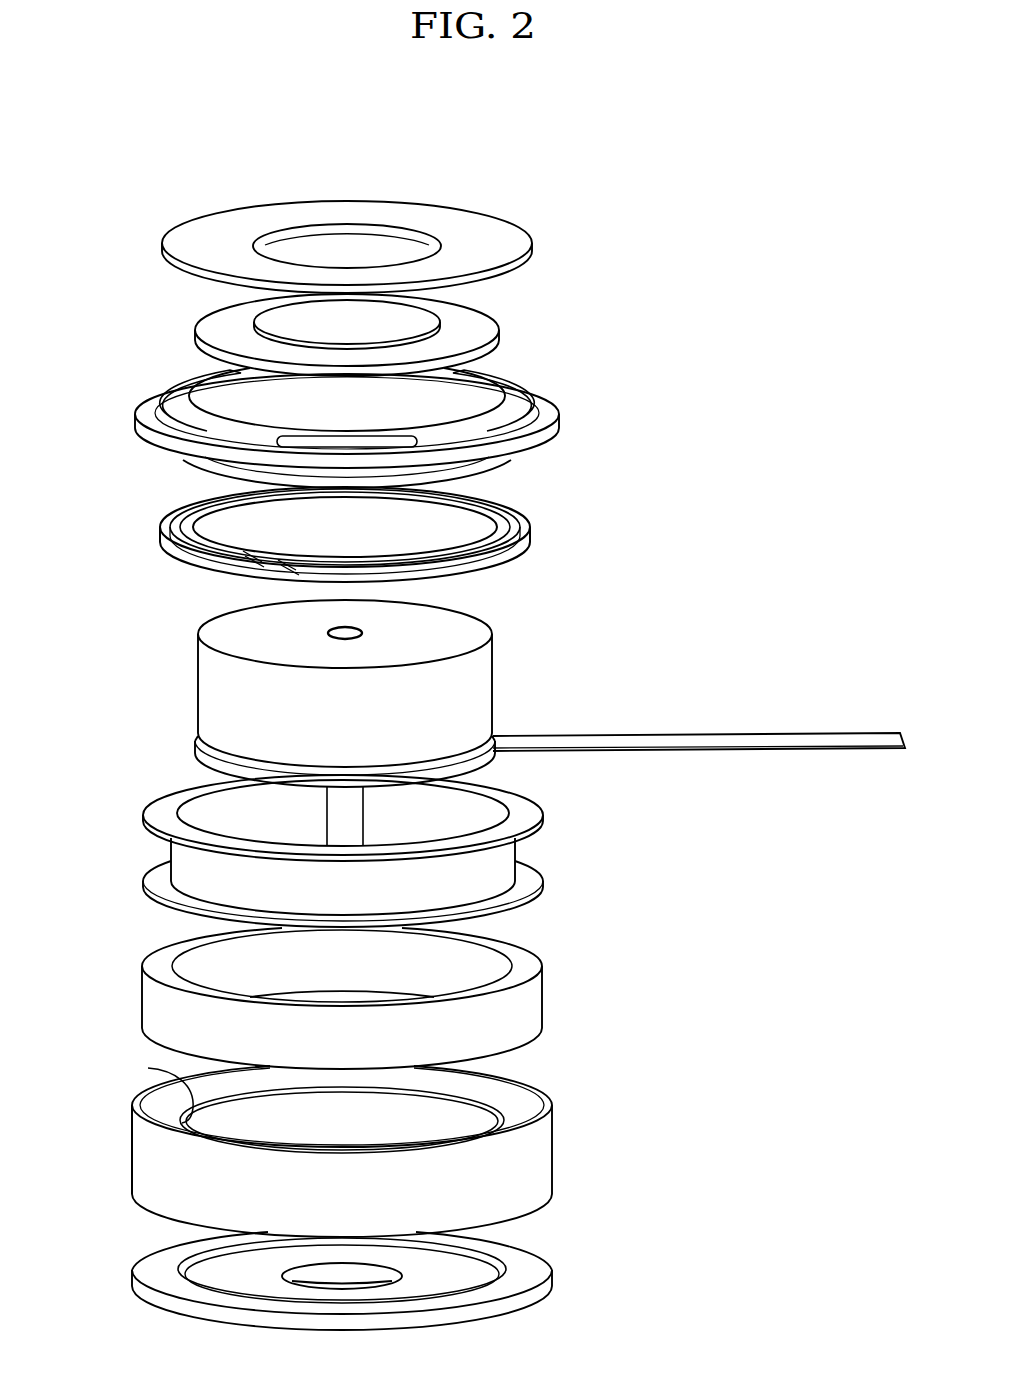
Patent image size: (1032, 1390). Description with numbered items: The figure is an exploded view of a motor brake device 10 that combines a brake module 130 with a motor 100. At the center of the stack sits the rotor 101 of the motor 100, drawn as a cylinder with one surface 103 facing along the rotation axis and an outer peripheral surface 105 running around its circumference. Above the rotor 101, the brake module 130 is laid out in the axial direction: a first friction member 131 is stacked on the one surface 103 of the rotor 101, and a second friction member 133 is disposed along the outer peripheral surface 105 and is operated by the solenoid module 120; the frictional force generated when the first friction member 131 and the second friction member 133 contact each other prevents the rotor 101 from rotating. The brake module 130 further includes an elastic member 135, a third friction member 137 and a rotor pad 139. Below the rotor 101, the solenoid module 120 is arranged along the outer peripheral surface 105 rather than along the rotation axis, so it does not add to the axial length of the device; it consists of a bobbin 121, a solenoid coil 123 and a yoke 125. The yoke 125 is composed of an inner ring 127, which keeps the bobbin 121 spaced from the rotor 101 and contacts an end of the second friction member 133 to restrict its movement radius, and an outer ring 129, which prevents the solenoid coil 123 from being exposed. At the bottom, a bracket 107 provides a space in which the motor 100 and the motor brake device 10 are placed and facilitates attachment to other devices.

The motor brake device 10 is at (106, 205).
The motor 100 is at (163, 698).
The rotor 101 is at (570, 607).
The one surface of the rotor 103 is at (452, 630).
The outer peripheral surface 105 is at (493, 682).
The bracket 107 is at (553, 1272).
The solenoid module 120 is at (638, 1143).
The bobbin 121 is at (545, 805).
The solenoid coil 123 is at (545, 995).
The yoke 125 is at (552, 1142).
The inner ring 127 is at (146, 1066).
The outer ring 129 is at (132, 1121).
The brake module 130 is at (643, 249).
The first friction member 131 is at (535, 244).
The second friction member 133 is at (558, 417).
The elastic member 135 is at (530, 530).
The third friction member 137 is at (521, 402).
The rotor pad 139 is at (500, 329).